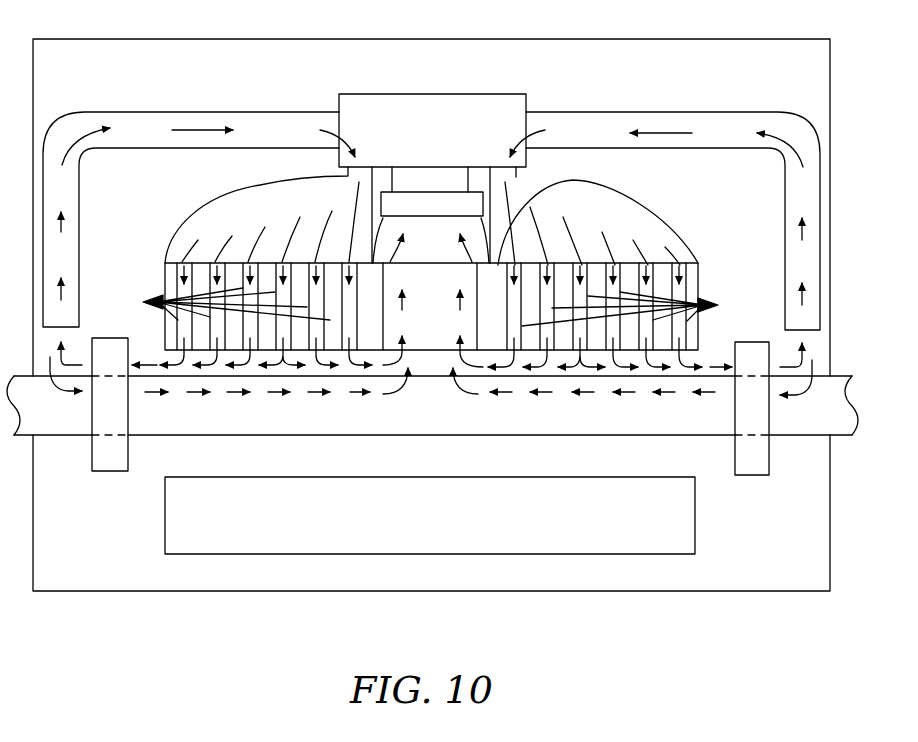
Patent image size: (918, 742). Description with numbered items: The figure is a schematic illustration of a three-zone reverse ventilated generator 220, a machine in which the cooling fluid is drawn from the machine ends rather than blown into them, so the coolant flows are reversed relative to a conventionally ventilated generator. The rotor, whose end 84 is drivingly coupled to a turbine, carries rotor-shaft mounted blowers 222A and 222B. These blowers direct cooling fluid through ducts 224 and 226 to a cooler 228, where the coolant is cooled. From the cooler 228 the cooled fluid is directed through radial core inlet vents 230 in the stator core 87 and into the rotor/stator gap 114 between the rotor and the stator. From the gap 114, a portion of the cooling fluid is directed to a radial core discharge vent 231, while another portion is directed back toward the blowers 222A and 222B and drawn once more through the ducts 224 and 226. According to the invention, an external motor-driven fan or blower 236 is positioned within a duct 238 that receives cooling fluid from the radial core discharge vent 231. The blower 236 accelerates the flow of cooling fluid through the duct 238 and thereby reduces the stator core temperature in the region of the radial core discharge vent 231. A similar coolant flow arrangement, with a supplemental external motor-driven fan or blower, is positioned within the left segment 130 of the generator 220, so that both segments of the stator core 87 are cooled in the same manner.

The end 84 is at (858, 418).
The stator core 87 is at (165, 285).
The rotor/stator gap 114 is at (427, 368).
The left segment 130 is at (410, 556).
The three-zone reverse ventilated generator 220 is at (276, 591).
The rotor-shaft mounted blower 222A is at (126, 472).
The rotor-shaft mounted blower 222B is at (750, 476).
The duct 224 is at (166, 112).
The duct 226 is at (700, 112).
The cooler 228 is at (432, 94).
The radial core inlet vents 230 is at (430, 307).
The radial core discharge vent 231 is at (517, 178).
The external motor-driven fan or blower 236 is at (432, 192).
The duct 238 is at (372, 218).